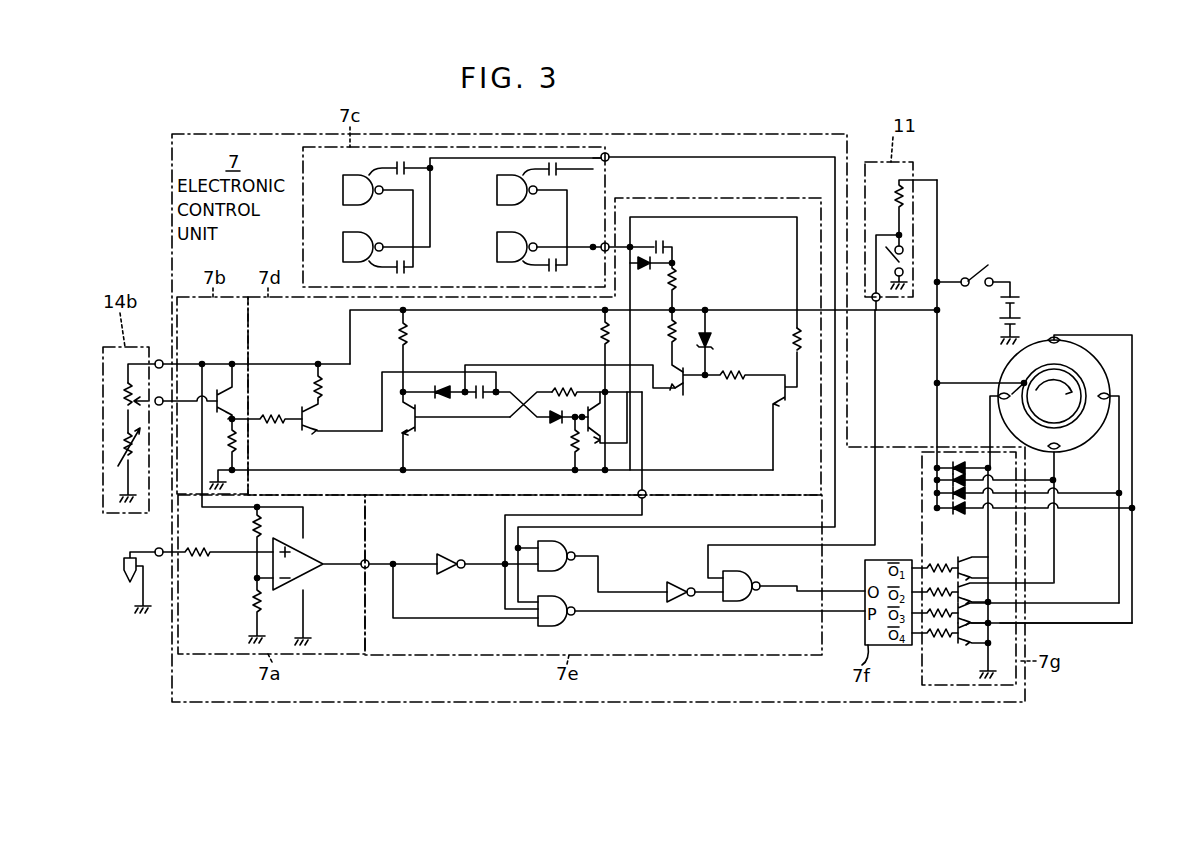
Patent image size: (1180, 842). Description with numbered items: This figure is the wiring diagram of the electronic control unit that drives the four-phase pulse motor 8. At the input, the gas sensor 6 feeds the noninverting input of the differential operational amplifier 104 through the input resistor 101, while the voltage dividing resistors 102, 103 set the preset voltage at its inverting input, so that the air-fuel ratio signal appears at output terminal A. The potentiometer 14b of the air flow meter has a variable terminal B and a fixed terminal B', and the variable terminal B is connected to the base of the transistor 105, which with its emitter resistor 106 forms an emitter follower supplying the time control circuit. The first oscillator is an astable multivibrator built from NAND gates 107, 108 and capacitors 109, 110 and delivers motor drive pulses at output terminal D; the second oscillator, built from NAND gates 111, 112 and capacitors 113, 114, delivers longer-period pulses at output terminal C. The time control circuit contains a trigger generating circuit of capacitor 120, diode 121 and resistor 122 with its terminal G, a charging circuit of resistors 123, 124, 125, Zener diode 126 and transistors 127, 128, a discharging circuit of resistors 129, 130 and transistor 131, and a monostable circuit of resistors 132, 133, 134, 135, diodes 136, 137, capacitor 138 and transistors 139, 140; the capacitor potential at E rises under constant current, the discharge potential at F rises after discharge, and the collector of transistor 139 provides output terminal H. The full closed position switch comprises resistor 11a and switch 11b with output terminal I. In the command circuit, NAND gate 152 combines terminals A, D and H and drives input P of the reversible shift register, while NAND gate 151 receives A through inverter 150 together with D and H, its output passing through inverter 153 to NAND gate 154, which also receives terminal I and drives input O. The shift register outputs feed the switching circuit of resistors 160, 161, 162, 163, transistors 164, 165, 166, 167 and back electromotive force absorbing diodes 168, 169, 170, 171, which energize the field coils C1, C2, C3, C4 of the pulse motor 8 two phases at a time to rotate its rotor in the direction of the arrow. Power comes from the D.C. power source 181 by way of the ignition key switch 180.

The gas sensor 6 is at (128, 556).
The pulse motor 8 is at (1090, 372).
The resistor 11a is at (896, 198).
The switch 11b is at (904, 256).
The potentiometer 14b is at (136, 433).
The input resistor 101 is at (196, 548).
The voltage dividing resistor 102 is at (262, 520).
The voltage dividing resistor 103 is at (252, 598).
The differential operational amplifier 104 is at (310, 582).
The transistor 105 is at (217, 388).
The emitter resistor 106 is at (238, 438).
The NAND gate 107 is at (343, 186).
The NAND gate 108 is at (343, 244).
The capacitor 109 is at (400, 162).
The capacitor 110 is at (405, 271).
The NAND gate 111 is at (495, 188).
The NAND gate 112 is at (495, 244).
The capacitor 113 is at (552, 175).
The capacitor 114 is at (551, 271).
The capacitor 120 is at (658, 241).
The diode 121 is at (643, 270).
The resistor 122 is at (678, 282).
The resistor 123 is at (792, 343).
The resistor 124 is at (733, 375).
The resistor 125 is at (669, 334).
The Zener diode 126 is at (708, 336).
The transistor 127 is at (780, 396).
The transistor 128 is at (686, 388).
The resistor 129 is at (272, 414).
The resistor 130 is at (324, 385).
The transistor 131 is at (322, 412).
The resistor 132 is at (400, 326).
The resistor 133 is at (568, 446).
The resistor 134 is at (602, 330).
The resistor 135 is at (558, 388).
The diode 136 is at (556, 422).
The diode 137 is at (440, 386).
The capacitor 138 is at (480, 398).
The transistor 139 is at (605, 422).
The transistor 140 is at (408, 428).
The inverter 150 is at (447, 552).
The NAND gate 151 is at (566, 543).
The NAND gate 152 is at (566, 626).
The inverter 153 is at (675, 582).
The NAND gate 154 is at (752, 566).
The resistor 160 is at (937, 563).
The resistor 161 is at (932, 587).
The resistor 162 is at (930, 637).
The resistor 163 is at (952, 640).
The transistor 164 is at (973, 553).
The transistor 165 is at (990, 595).
The transistor 166 is at (990, 615).
The transistor 167 is at (990, 635).
The back electromotive force absorbing diode 168 is at (958, 462).
The back electromotive force absorbing diode 169 is at (948, 468).
The back electromotive force absorbing diode 170 is at (948, 493).
The back electromotive force absorbing diode 171 is at (948, 508).
The ignition key switch 180 is at (994, 270).
The D.C. power source 181 is at (1020, 310).
The output terminal A is at (367, 568).
The variable terminal B is at (158, 416).
The fixed terminal B' is at (158, 344).
The output terminal C is at (601, 246).
The output terminal D is at (608, 154).
The capacitor potential point E is at (465, 385).
The discharge potential point F is at (496, 386).
The terminal G is at (674, 263).
The output terminal H is at (645, 492).
The output terminal I is at (879, 300).
The field coil C1 is at (1000, 392).
The field coil C2 is at (1056, 452).
The field coil C3 is at (1112, 394).
The field coil C4 is at (1048, 345).